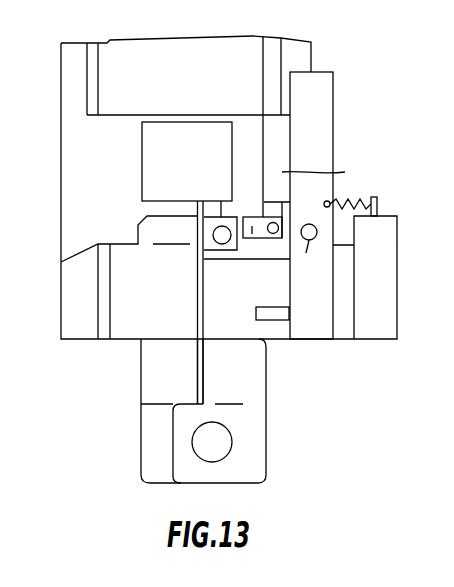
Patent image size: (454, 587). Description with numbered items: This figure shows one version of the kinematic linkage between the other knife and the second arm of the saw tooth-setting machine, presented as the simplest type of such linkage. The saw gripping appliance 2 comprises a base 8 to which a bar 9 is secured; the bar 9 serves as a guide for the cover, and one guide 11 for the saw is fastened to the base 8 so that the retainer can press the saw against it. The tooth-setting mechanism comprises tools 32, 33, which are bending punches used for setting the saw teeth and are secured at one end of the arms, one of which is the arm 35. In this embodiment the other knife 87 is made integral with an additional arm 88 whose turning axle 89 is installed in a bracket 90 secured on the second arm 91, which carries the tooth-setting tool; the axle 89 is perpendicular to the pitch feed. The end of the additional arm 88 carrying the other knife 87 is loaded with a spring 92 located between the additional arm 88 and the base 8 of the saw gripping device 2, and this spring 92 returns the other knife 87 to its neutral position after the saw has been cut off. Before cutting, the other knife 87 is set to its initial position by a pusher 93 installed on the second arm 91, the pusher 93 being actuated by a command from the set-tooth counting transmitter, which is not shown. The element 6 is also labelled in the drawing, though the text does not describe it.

The appliance for gripping the sides of the saw 2 is at (87, 107).
The base plate 6 is at (318, 159).
The base 8 is at (80, 316).
The bar 9 is at (107, 86).
The guide 11 is at (158, 146).
The tool 32 is at (187, 212).
The tool 33 is at (210, 212).
The arm 35 is at (157, 386).
The other knife 87 is at (289, 143).
The additional arm 88 is at (317, 132).
The turning axle 89 is at (252, 232).
The bracket 90 is at (278, 328).
The second arm 91 is at (250, 440).
The spring 92 is at (355, 197).
The pusher 93 is at (268, 313).